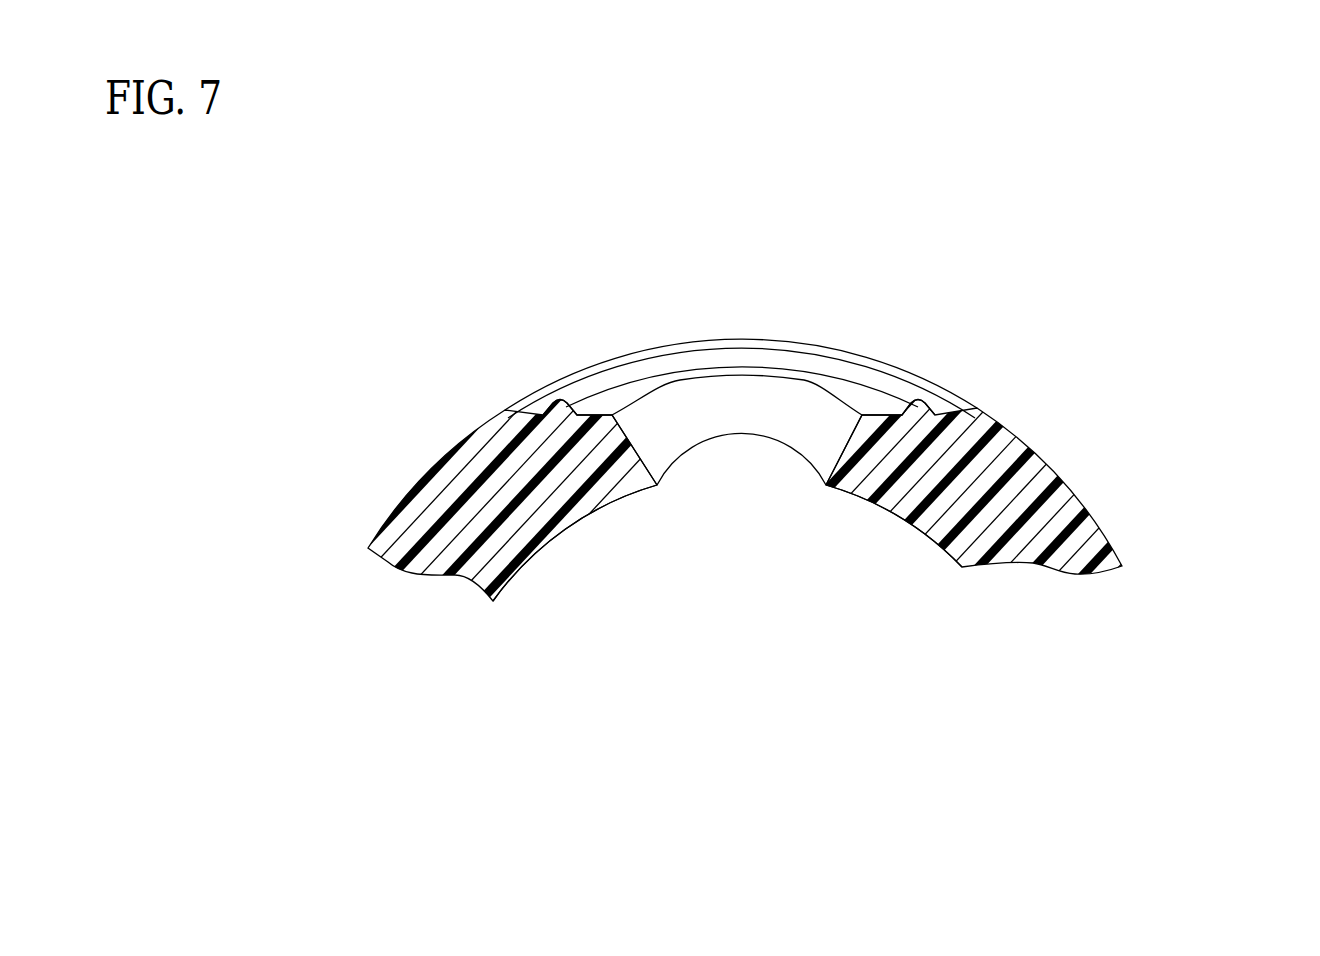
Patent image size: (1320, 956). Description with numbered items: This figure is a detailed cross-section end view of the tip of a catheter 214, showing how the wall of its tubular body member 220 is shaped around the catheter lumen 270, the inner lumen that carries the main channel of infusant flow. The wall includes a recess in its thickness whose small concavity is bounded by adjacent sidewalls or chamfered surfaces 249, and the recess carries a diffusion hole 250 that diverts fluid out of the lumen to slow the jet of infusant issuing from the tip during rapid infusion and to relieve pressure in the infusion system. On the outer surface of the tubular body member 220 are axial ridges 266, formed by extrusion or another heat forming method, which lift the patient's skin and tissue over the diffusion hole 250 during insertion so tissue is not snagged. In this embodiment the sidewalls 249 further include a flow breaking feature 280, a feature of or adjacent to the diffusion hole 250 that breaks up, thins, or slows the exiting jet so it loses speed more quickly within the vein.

The catheter 214 is at (1154, 239).
The tubular body member 220 is at (1090, 540).
The sidewalls 249 is at (928, 395).
The diffusion hole 250 is at (666, 423).
The axial ridges 266 is at (1053, 464).
The catheter lumen 270 is at (776, 586).
The flow breaking feature 280 is at (721, 358).